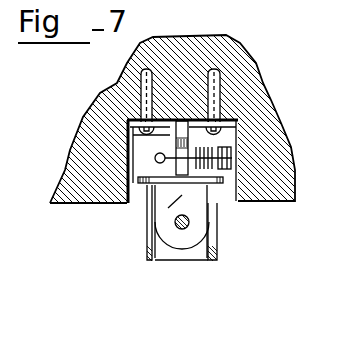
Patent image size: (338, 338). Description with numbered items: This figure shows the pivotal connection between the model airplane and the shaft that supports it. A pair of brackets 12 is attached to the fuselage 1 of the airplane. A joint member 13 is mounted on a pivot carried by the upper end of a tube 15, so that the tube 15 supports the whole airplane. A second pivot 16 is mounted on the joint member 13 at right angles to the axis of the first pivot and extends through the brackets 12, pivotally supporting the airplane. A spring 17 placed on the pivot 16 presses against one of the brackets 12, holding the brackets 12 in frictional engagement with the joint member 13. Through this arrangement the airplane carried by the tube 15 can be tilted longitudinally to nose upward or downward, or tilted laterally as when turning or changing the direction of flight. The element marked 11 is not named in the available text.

The fuselage 1 is at (246, 72).
The housing with bolt 11 is at (238, 168).
The brackets 12 is at (167, 132).
The joint member 13 is at (163, 191).
The tube 15 is at (147, 257).
The pivot 16 is at (156, 160).
The spring 17 is at (190, 222).